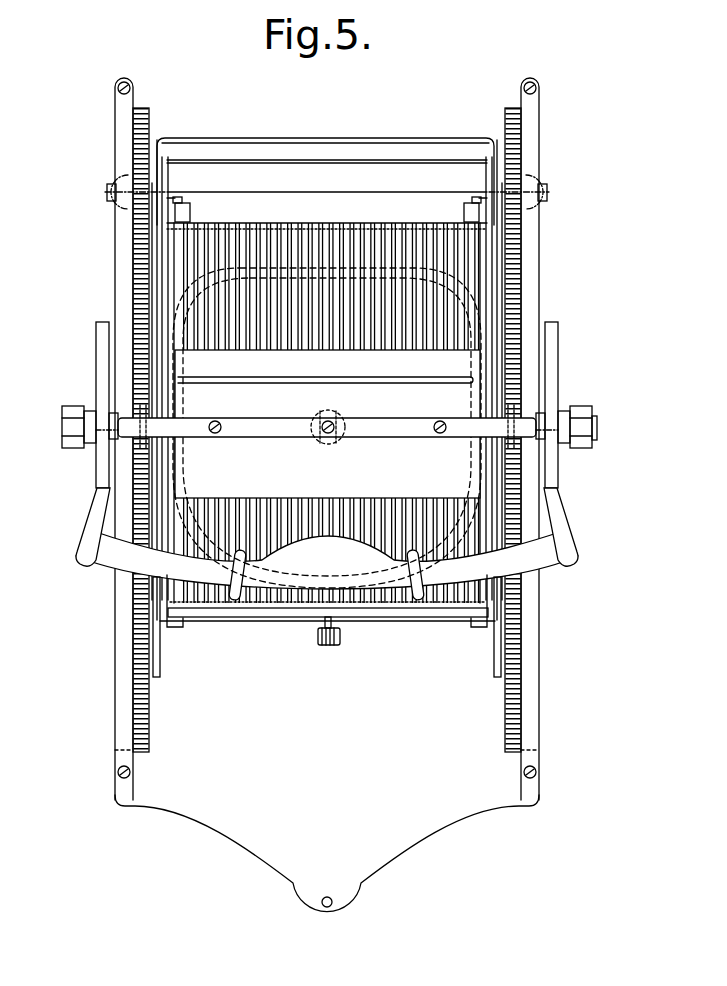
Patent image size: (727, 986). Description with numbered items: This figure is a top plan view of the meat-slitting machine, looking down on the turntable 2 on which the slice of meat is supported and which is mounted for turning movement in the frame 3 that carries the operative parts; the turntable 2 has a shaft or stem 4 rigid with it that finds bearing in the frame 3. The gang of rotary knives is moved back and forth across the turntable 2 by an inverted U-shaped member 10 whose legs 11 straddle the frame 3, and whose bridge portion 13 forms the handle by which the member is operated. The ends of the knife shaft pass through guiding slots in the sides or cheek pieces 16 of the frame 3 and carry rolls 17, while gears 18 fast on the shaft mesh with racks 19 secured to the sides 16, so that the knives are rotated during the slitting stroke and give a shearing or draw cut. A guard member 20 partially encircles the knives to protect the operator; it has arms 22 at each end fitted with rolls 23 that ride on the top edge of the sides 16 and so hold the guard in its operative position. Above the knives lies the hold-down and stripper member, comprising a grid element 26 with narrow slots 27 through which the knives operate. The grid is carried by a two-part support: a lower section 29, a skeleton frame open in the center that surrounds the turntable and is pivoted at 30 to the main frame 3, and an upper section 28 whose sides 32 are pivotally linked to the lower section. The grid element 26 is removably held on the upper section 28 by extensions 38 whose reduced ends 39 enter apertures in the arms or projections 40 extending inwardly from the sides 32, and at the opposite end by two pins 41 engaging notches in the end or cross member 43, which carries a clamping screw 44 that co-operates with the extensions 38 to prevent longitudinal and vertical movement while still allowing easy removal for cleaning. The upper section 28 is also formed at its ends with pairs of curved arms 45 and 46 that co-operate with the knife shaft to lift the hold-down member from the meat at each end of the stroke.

The turntable 2 is at (503, 318).
The frame 3 is at (460, 752).
The shaft or stem 4 is at (343, 440).
The inverted U-shaped member 10 is at (566, 565).
The legs 11 is at (101, 468).
The bridge portion 13 is at (385, 598).
The sides or cheek pieces 16 is at (135, 265).
The rolls 17 is at (82, 438).
The gears 18 is at (97, 450).
The racks 19 is at (150, 712).
The guard member 20 is at (443, 472).
The arms 22 is at (134, 422).
The rolls 23 is at (108, 412).
The grid element 26 is at (347, 222).
The narrow slots 27 is at (268, 222).
The upper section 28 is at (271, 140).
The section 29 is at (313, 160).
The pivot 30 is at (113, 186).
The sides 32 is at (160, 325).
The extensions 38 is at (188, 214).
The reduced ends 39 is at (177, 198).
The arms or projections 40 is at (185, 203).
The pins 41 is at (174, 628).
The end or cross member 43 is at (358, 617).
The clamping screw 44 is at (322, 645).
The curved arms 45 is at (152, 268).
The curved arms 46 is at (155, 660).